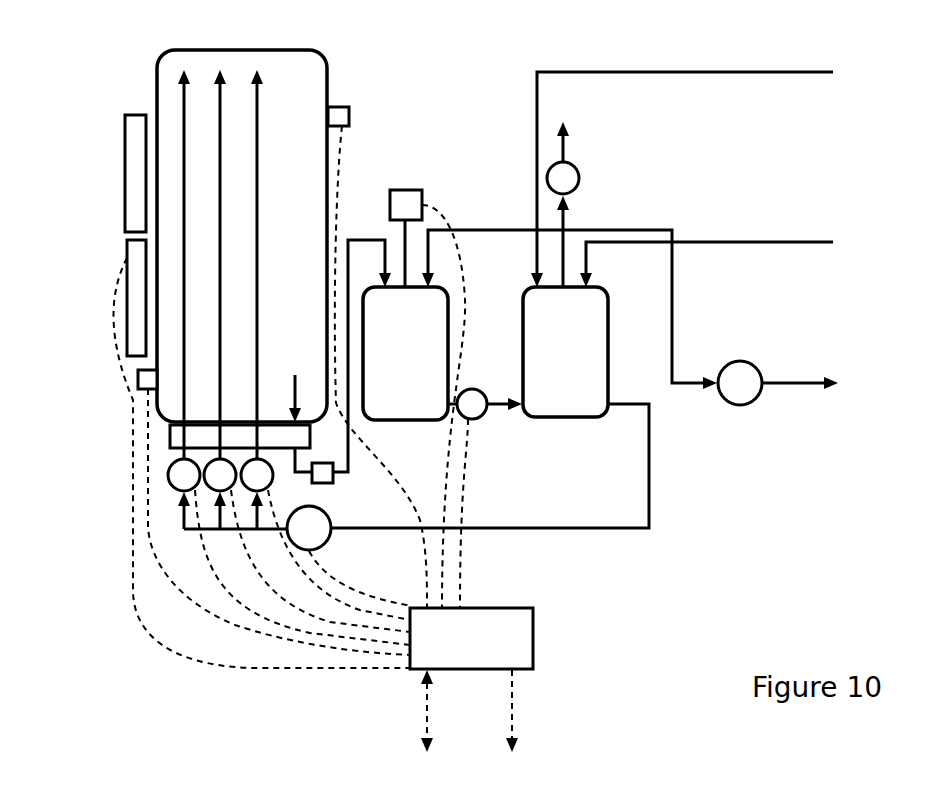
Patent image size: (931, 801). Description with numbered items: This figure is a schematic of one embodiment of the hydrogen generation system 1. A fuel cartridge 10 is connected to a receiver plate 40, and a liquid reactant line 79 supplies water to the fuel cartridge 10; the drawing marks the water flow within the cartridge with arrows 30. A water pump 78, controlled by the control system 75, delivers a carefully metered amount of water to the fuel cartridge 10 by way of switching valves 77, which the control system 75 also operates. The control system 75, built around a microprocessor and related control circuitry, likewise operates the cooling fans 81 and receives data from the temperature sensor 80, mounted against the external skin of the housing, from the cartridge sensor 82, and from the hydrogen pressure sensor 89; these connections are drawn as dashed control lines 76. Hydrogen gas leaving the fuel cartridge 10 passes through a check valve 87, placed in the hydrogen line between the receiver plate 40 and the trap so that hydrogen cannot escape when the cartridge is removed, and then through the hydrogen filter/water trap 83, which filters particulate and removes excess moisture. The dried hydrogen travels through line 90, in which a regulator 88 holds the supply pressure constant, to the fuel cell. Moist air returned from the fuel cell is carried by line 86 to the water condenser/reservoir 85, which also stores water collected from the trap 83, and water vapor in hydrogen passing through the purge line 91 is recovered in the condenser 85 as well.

The hydrogen generation system 1 is at (75, 290).
The fuel cartridge 10 is at (157, 70).
The water flow 30 is at (258, 252).
The receiver plate 40 is at (170, 437).
The control system 75 is at (470, 700).
The control lines 76 is at (250, 675).
The switching valves 77 is at (170, 477).
The water pump 78 is at (309, 528).
The liquid reactant line 79 is at (540, 535).
The temperature sensor 80 is at (138, 380).
The cooling fans 81 is at (125, 215).
The cartridge sensor 82 is at (350, 112).
The hydrogen filter/water trap 83 is at (442, 353).
The water condenser/reservoir 85 is at (565, 260).
The moist air line 86 is at (612, 70).
The check valve 87 is at (336, 482).
The regulator 88 is at (752, 362).
The hydrogen pressure sensor 89 is at (412, 190).
The hydrogen line 90 is at (678, 312).
The purge line 91 is at (752, 240).